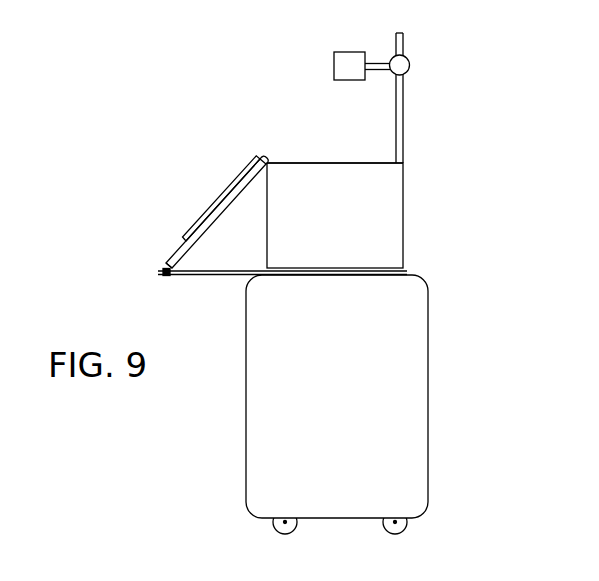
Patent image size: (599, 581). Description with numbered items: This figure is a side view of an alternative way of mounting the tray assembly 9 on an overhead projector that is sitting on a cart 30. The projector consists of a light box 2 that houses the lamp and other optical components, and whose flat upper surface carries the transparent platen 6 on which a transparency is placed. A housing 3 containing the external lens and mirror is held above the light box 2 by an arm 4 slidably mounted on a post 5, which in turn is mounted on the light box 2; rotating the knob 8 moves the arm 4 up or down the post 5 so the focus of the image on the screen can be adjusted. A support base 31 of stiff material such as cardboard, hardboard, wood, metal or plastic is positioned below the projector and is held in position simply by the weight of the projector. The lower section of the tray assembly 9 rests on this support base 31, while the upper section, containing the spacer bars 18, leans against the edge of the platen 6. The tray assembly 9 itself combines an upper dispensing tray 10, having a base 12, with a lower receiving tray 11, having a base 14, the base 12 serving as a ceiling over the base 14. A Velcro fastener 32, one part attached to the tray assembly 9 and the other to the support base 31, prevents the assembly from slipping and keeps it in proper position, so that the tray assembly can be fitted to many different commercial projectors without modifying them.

The light box 2 is at (350, 222).
The housing 3 is at (352, 66).
The arm 4 is at (373, 63).
The post 5 is at (400, 131).
The platen 6 is at (368, 164).
The knob 8 is at (405, 65).
The tray assembly 9 is at (203, 188).
The dispensing tray 10 is at (196, 214).
The receiving tray 11 is at (235, 213).
The base 12 is at (222, 200).
The base 14 is at (177, 249).
The spacer bars 18 is at (266, 157).
The cart 30 is at (355, 386).
The support base 31 is at (229, 276).
The Velcro fastener 32 is at (168, 276).